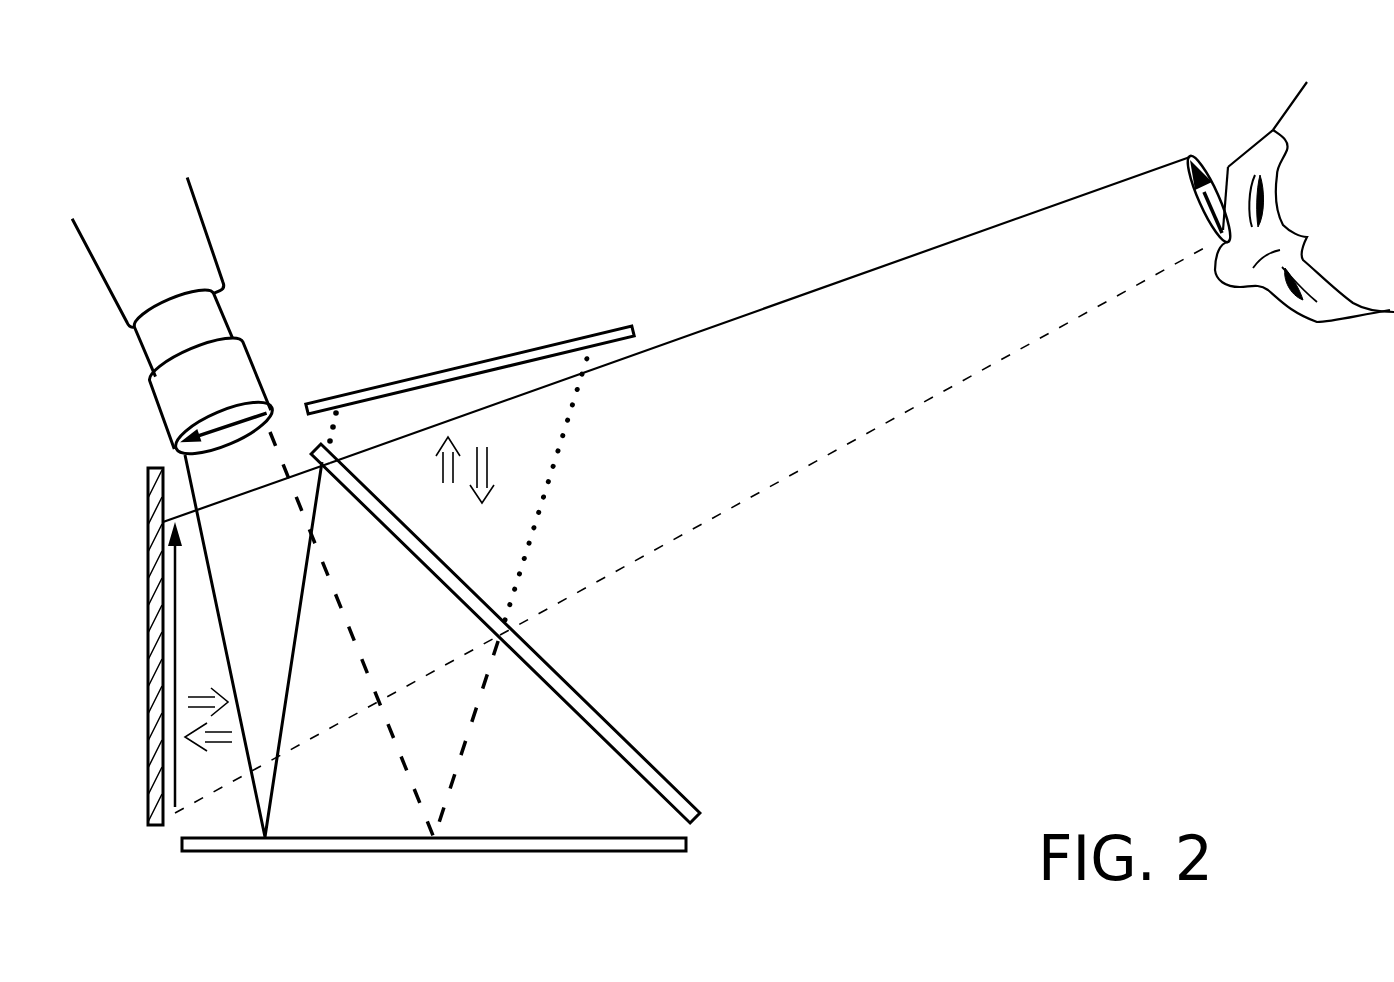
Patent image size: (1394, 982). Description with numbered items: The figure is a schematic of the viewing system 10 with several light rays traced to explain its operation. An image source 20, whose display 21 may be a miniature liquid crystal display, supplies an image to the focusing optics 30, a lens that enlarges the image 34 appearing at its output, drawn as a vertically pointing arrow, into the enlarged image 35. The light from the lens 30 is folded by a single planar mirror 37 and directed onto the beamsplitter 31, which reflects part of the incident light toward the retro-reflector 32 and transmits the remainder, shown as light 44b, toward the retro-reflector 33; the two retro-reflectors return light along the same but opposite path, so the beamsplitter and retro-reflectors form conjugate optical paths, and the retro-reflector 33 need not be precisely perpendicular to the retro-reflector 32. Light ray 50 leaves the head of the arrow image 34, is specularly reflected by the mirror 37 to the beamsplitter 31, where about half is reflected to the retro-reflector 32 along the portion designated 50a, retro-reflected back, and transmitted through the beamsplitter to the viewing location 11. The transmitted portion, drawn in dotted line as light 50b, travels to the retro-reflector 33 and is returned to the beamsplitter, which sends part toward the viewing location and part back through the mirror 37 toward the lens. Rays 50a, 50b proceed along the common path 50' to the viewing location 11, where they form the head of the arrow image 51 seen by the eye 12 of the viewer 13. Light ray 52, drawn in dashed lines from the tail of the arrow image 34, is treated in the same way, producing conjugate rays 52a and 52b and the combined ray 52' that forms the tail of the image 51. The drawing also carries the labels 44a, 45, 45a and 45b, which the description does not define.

The viewing system 10 is at (615, 280).
The viewing location 11 is at (1190, 155).
The eye 12 is at (1250, 182).
The viewer 13 is at (1330, 102).
The image source 20 is at (250, 208).
The display 21 is at (228, 263).
The focusing optics 30 is at (205, 417).
The beamsplitter 31 is at (636, 745).
The retro-reflector 32 is at (147, 648).
The retro-reflector 33 is at (466, 360).
The image 34 is at (230, 433).
The enlarged image 35 is at (178, 592).
The mirror 37 is at (472, 852).
The mirror translation direction 44a is at (217, 750).
The light 44b is at (446, 455).
The mirror rotation direction 45 is at (740, 784).
The mirror translation direction 45a is at (192, 697).
The mirror translation direction 45b is at (488, 468).
The light ray 50 is at (253, 646).
The path 50' is at (760, 310).
The light ray portion 50a is at (268, 486).
The light 50b is at (340, 425).
The arrow image 51 is at (1193, 198).
The light ray 52 is at (387, 635).
The combined light ray 52' is at (853, 441).
The conjugate light ray 52a is at (306, 736).
The conjugate light ray 52b is at (547, 505).